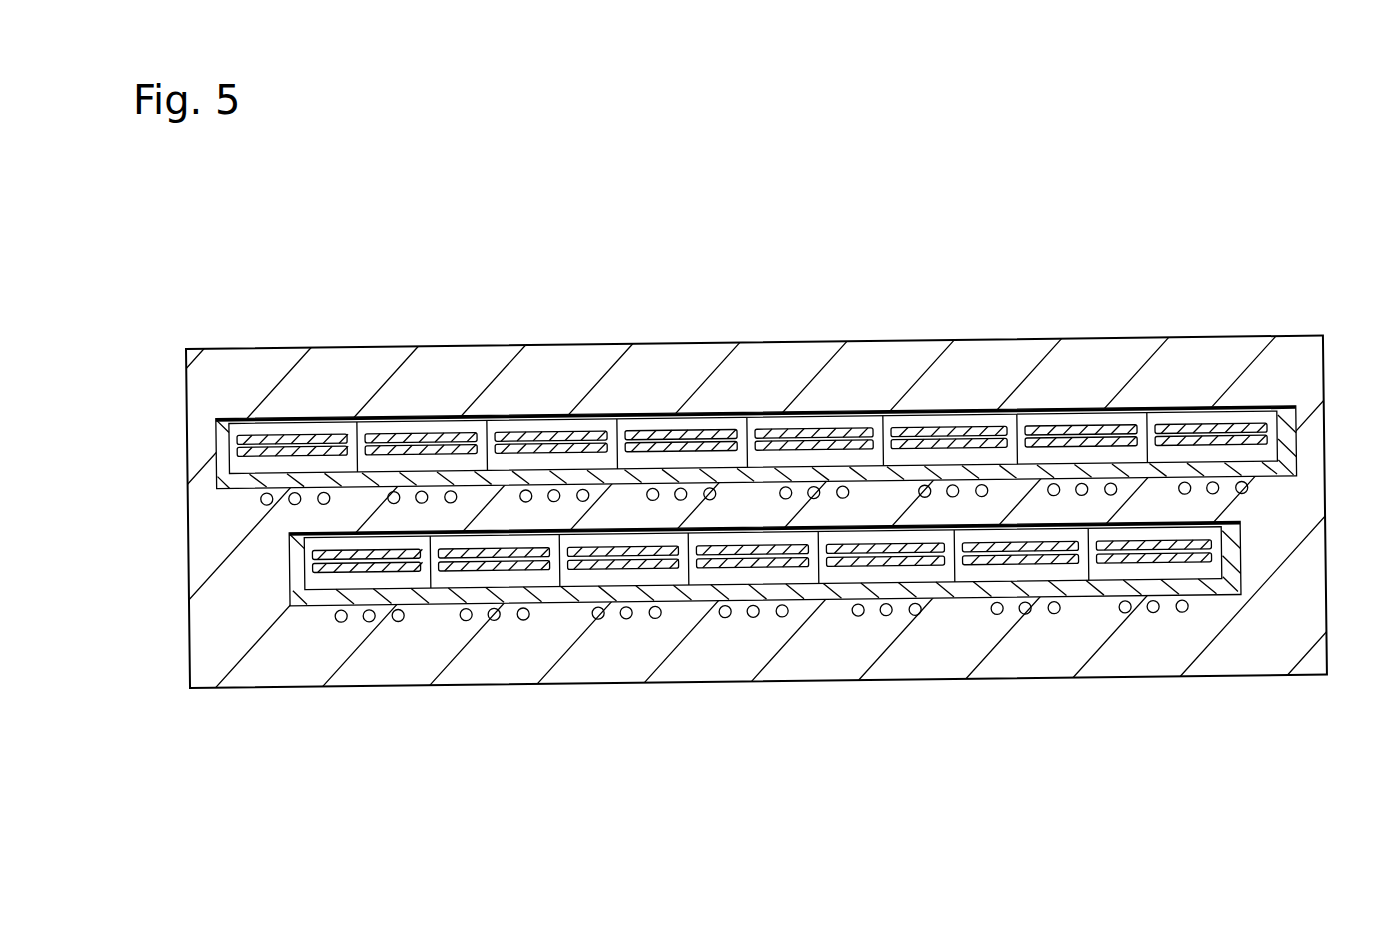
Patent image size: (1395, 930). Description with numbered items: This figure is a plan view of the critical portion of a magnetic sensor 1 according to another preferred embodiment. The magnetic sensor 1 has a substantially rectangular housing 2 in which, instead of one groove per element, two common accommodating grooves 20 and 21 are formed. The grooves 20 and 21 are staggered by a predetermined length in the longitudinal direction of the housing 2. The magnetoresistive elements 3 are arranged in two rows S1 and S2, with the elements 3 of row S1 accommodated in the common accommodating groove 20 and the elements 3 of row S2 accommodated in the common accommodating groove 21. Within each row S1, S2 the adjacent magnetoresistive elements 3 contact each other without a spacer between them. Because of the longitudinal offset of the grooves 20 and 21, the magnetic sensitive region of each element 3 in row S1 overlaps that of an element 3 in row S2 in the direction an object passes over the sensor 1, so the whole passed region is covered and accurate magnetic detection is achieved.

The magnetic sensor 1 is at (1240, 314).
The housing 2 is at (1304, 375).
The magnetoresistive elements 3 is at (1159, 410).
The common accommodating groove 20 is at (1286, 456).
The common accommodating groove 21 is at (1243, 572).
The row S1 is at (172, 447).
The row S2 is at (172, 565).